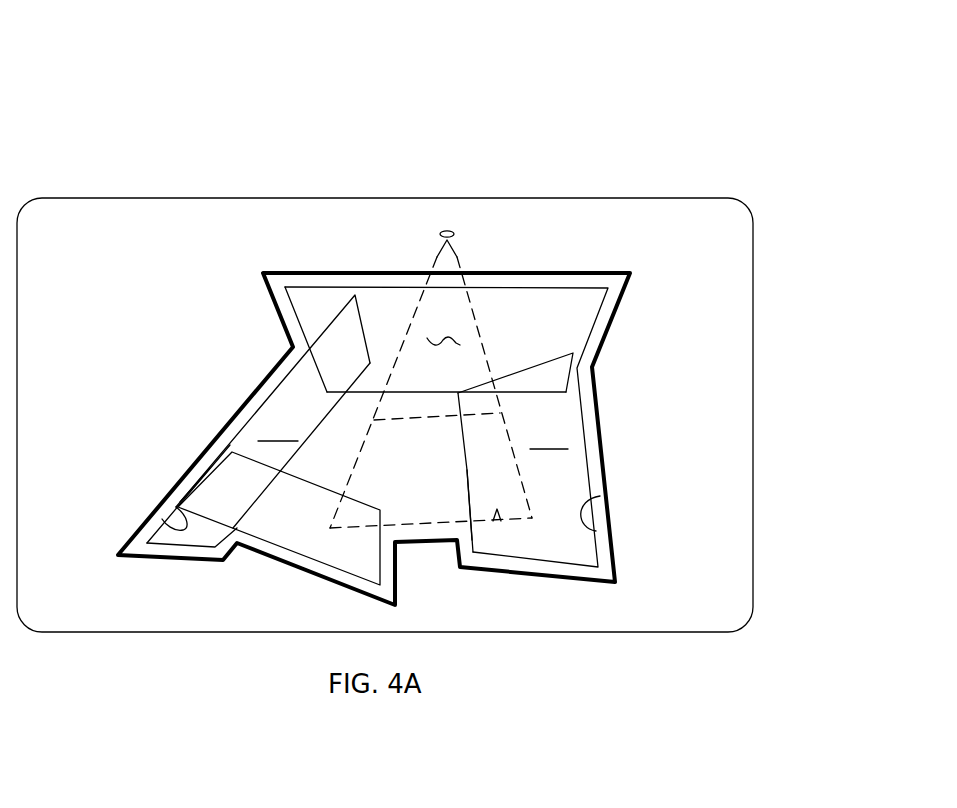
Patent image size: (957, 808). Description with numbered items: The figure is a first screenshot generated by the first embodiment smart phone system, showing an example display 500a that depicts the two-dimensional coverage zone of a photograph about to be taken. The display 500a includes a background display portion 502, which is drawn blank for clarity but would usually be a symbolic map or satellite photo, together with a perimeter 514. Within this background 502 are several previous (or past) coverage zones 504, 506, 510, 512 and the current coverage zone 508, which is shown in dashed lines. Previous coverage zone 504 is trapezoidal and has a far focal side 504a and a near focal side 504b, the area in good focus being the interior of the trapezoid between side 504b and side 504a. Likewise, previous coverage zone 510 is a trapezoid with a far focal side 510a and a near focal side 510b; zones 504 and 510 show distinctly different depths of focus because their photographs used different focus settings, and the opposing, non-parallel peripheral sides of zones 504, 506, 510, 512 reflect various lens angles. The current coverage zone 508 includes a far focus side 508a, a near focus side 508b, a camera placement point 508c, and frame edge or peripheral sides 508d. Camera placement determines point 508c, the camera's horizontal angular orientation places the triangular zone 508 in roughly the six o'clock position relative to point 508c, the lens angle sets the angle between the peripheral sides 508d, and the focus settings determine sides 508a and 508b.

The example display 500a is at (608, 83).
The background display portion 502 is at (678, 402).
The previous coverage zone 504 is at (259, 401).
The far focal side 504a is at (176, 527).
The near focal side 504b is at (330, 410).
The previous coverage zone 506 is at (318, 558).
The current coverage zone 508 is at (441, 338).
The far focus side 508a is at (497, 513).
The near focus side 508b is at (424, 417).
The camera placement point 508c is at (454, 232).
The frame edge sides 508d is at (437, 257).
The previous coverage zone 510 is at (515, 452).
The far focal side 510a is at (600, 496).
The near focal side 510b is at (468, 509).
The previous coverage zone 512 is at (603, 312).
The perimeter 514 is at (615, 582).